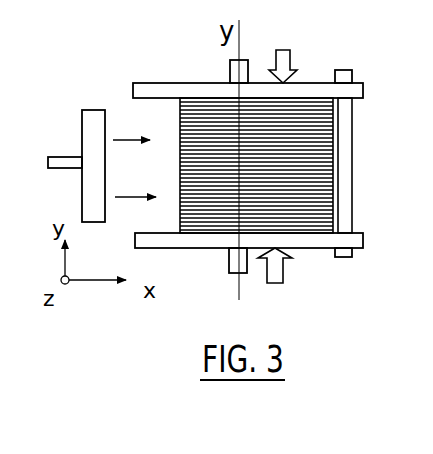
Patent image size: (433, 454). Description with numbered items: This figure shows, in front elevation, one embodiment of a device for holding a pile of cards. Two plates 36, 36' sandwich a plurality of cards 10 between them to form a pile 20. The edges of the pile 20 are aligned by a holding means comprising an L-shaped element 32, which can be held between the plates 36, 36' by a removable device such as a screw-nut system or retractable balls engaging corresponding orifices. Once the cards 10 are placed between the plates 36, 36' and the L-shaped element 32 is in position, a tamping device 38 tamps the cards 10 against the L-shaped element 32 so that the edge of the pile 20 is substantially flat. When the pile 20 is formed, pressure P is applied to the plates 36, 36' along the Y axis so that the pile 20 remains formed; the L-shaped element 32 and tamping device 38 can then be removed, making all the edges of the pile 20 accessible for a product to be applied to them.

The cards 10 is at (202, 185).
The pile 20 is at (178, 121).
The L-shaped element 32 is at (346, 139).
The plate 36 is at (247, 60).
The plate 36' is at (228, 253).
The tamping device 38 is at (95, 113).
The pressure P is at (277, 169).